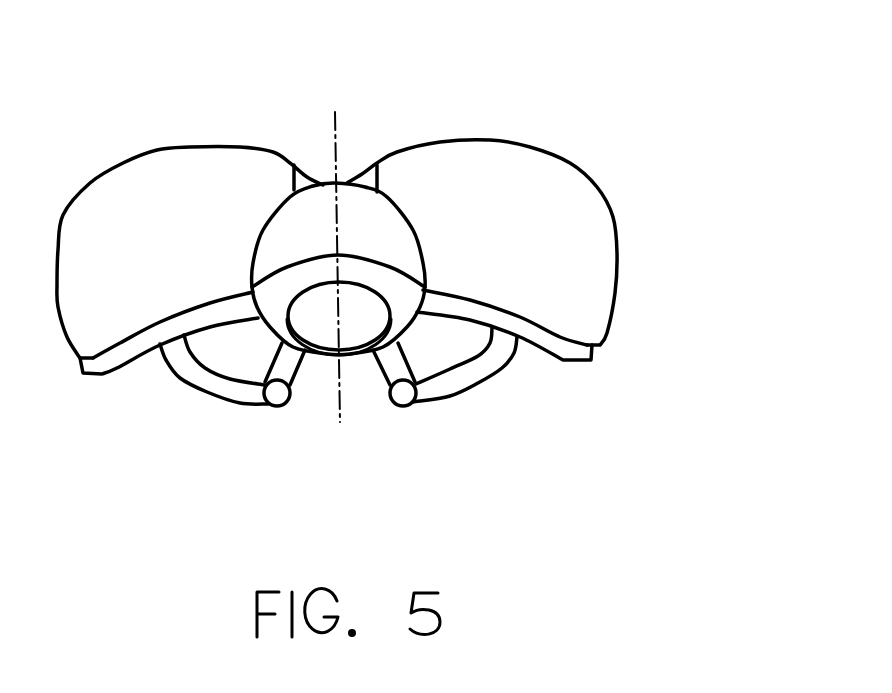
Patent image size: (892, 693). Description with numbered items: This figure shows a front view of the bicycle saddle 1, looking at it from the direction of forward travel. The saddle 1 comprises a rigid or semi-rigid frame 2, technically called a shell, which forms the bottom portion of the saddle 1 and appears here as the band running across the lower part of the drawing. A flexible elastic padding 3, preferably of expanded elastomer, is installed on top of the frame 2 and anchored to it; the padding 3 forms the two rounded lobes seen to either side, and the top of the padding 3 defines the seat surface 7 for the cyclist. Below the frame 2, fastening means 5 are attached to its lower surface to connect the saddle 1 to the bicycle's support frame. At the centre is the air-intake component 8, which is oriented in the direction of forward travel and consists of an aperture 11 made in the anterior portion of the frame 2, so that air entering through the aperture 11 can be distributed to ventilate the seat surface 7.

The saddle 1 is at (475, 107).
The frame 2 is at (558, 350).
The elastic padding 3 is at (588, 255).
The fastening means 5 is at (192, 376).
The seat surface 7 is at (168, 173).
The air-intake component 8 is at (313, 407).
The aperture 11 is at (352, 332).